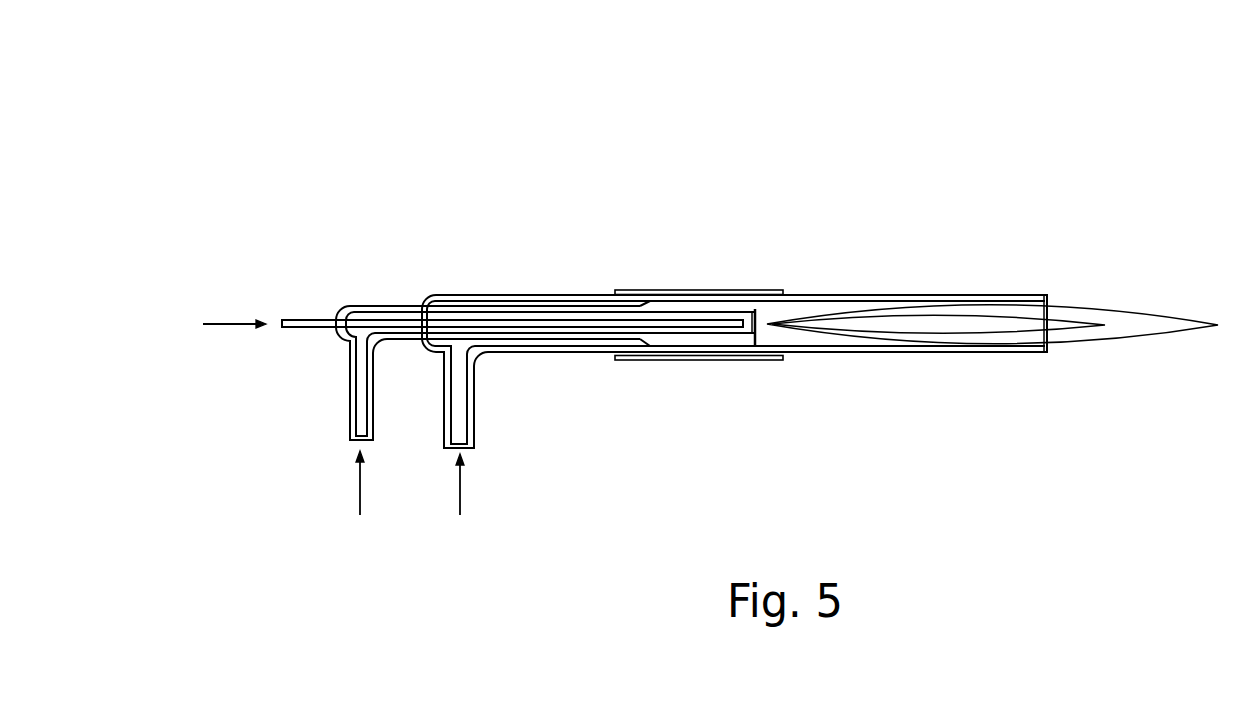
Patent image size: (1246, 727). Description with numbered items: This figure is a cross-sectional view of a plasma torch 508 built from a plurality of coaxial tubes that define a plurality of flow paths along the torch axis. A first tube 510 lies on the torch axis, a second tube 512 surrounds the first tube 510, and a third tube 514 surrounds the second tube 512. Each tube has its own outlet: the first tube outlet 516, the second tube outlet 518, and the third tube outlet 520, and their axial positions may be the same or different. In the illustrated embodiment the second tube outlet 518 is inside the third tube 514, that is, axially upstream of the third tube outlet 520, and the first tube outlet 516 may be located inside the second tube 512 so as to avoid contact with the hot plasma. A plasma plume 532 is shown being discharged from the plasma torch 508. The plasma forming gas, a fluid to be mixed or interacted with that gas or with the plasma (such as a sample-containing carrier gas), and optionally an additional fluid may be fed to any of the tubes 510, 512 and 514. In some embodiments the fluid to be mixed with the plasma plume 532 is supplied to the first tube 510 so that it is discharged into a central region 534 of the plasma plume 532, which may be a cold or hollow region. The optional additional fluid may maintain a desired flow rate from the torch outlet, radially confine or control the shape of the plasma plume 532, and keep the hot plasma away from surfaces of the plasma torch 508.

The plasma torch 508 is at (238, 162).
The first tube 510 is at (565, 314).
The second tube 512 is at (477, 312).
The third tube 514 is at (526, 358).
The first tube outlet 516 is at (742, 338).
The second tube outlet 518 is at (765, 312).
The third tube outlet 520 is at (1035, 293).
The plasma plume 532 is at (848, 338).
The central region 534 is at (945, 320).